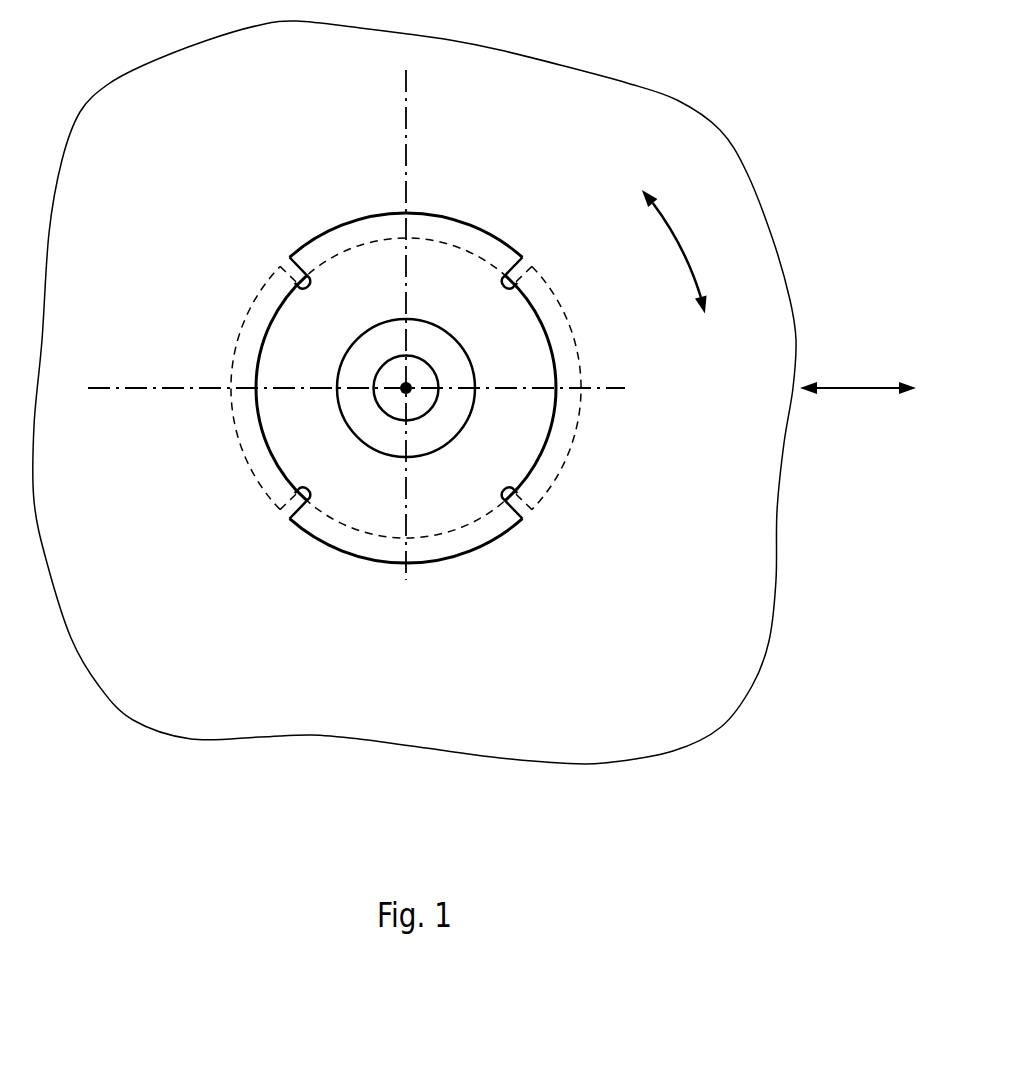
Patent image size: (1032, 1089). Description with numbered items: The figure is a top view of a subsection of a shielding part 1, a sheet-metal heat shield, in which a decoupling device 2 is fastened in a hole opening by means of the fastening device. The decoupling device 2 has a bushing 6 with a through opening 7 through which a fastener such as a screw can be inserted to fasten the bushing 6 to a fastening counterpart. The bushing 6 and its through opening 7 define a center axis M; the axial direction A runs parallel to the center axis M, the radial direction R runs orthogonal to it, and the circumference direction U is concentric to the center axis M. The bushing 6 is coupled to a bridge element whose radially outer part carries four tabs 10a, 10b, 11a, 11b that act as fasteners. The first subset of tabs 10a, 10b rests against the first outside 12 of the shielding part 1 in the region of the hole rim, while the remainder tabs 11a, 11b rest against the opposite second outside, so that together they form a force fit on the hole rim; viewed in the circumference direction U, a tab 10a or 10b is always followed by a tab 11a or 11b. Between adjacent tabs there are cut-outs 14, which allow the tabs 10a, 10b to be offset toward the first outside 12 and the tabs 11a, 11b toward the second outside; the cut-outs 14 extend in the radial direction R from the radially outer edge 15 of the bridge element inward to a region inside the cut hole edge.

The shielding part 1 is at (708, 135).
The decoupling device 2 is at (424, 390).
The bushing 6 is at (340, 417).
The through opening 7 is at (434, 400).
The tab 10a is at (327, 246).
The tab 10b is at (326, 536).
The tab 11a is at (573, 333).
The tab 11b is at (240, 335).
The first outside 12 is at (670, 609).
The cut-out 14 is at (292, 277).
The radially outer edge 15 is at (412, 338).
The center axis M is at (412, 382).
The circumference direction U is at (682, 248).
The radial direction R is at (855, 386).
The axial direction A is at (425, 84).